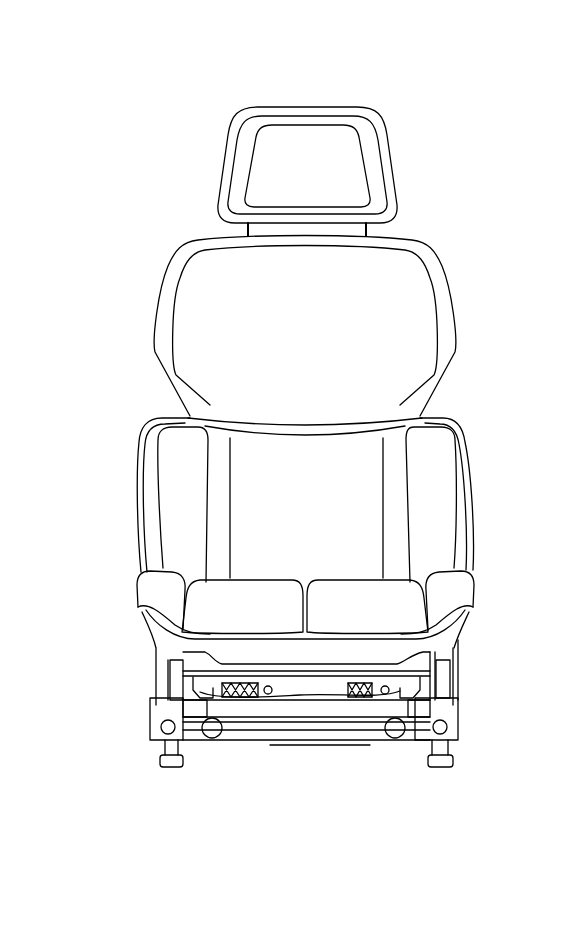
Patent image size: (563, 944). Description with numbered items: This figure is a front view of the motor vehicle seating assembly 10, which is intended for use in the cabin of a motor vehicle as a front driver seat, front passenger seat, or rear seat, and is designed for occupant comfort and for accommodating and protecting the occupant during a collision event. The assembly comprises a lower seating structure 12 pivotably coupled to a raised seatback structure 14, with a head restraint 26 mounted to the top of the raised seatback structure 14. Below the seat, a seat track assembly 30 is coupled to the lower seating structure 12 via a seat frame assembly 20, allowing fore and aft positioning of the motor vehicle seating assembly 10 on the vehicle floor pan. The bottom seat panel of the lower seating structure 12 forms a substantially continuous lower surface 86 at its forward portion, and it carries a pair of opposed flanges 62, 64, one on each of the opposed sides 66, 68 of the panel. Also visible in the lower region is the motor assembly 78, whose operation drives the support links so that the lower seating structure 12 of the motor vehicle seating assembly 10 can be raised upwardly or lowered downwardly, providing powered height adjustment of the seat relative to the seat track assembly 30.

The motor vehicle seating assembly 10 is at (446, 207).
The lower seating structure 12 is at (452, 592).
The raised seatback structure 14 is at (432, 486).
The seat frame assembly 20 is at (440, 702).
The head restraint 26 is at (300, 148).
The seat track assembly 30 is at (453, 744).
The flange 62 is at (158, 634).
The flange 64 is at (452, 633).
The side of bottom seat panel 66 is at (148, 582).
The side of bottom seat panel 68 is at (454, 563).
The motor assembly 78 is at (362, 696).
The lower surface 86 is at (260, 652).